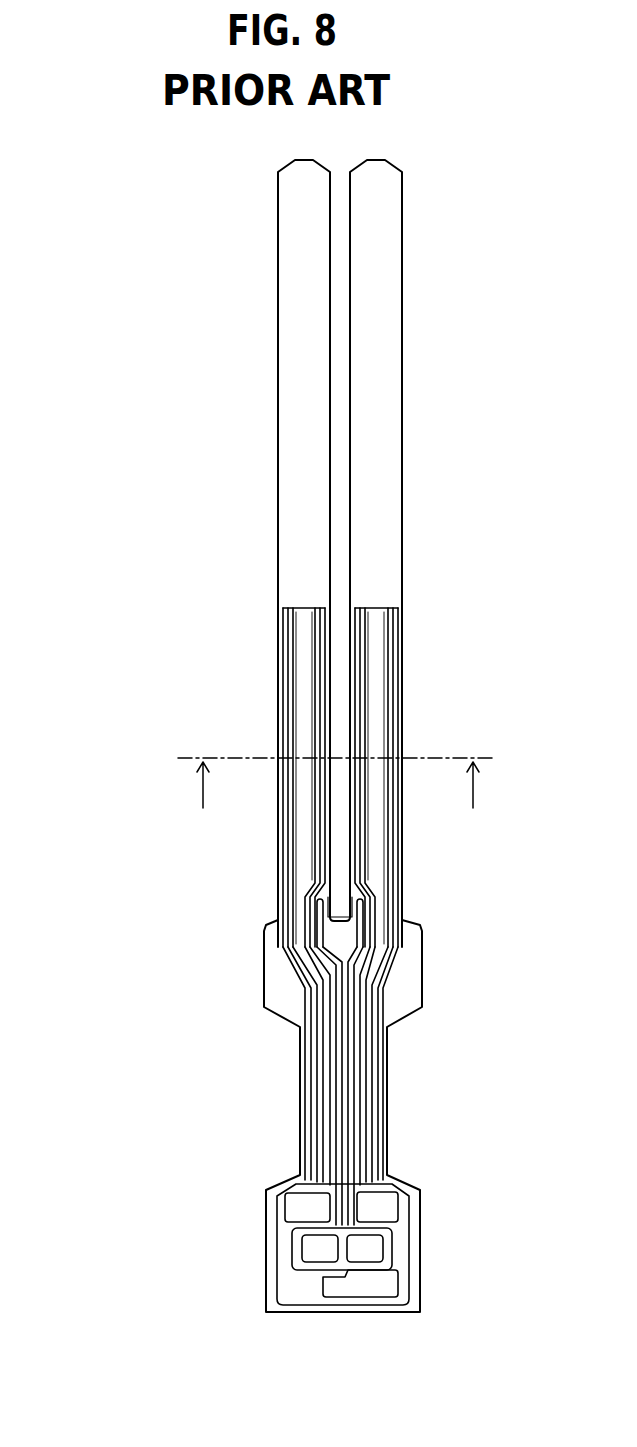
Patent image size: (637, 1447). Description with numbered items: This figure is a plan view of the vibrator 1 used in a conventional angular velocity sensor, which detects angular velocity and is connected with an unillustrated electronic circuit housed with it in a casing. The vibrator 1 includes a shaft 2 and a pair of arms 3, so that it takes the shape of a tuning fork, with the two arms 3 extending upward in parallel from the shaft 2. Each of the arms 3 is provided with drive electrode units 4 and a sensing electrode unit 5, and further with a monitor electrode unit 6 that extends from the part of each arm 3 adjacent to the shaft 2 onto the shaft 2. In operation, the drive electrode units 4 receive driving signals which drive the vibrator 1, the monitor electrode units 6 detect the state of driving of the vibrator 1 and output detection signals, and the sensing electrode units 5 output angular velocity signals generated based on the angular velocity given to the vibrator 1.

The vibrator 1 is at (76, 166).
The shaft 2 is at (175, 942).
The arms 3 is at (174, 166).
The drive electrode units 4 is at (318, 608).
The sensing electrode unit 5 is at (302, 678).
The monitor electrode unit 6 is at (322, 931).